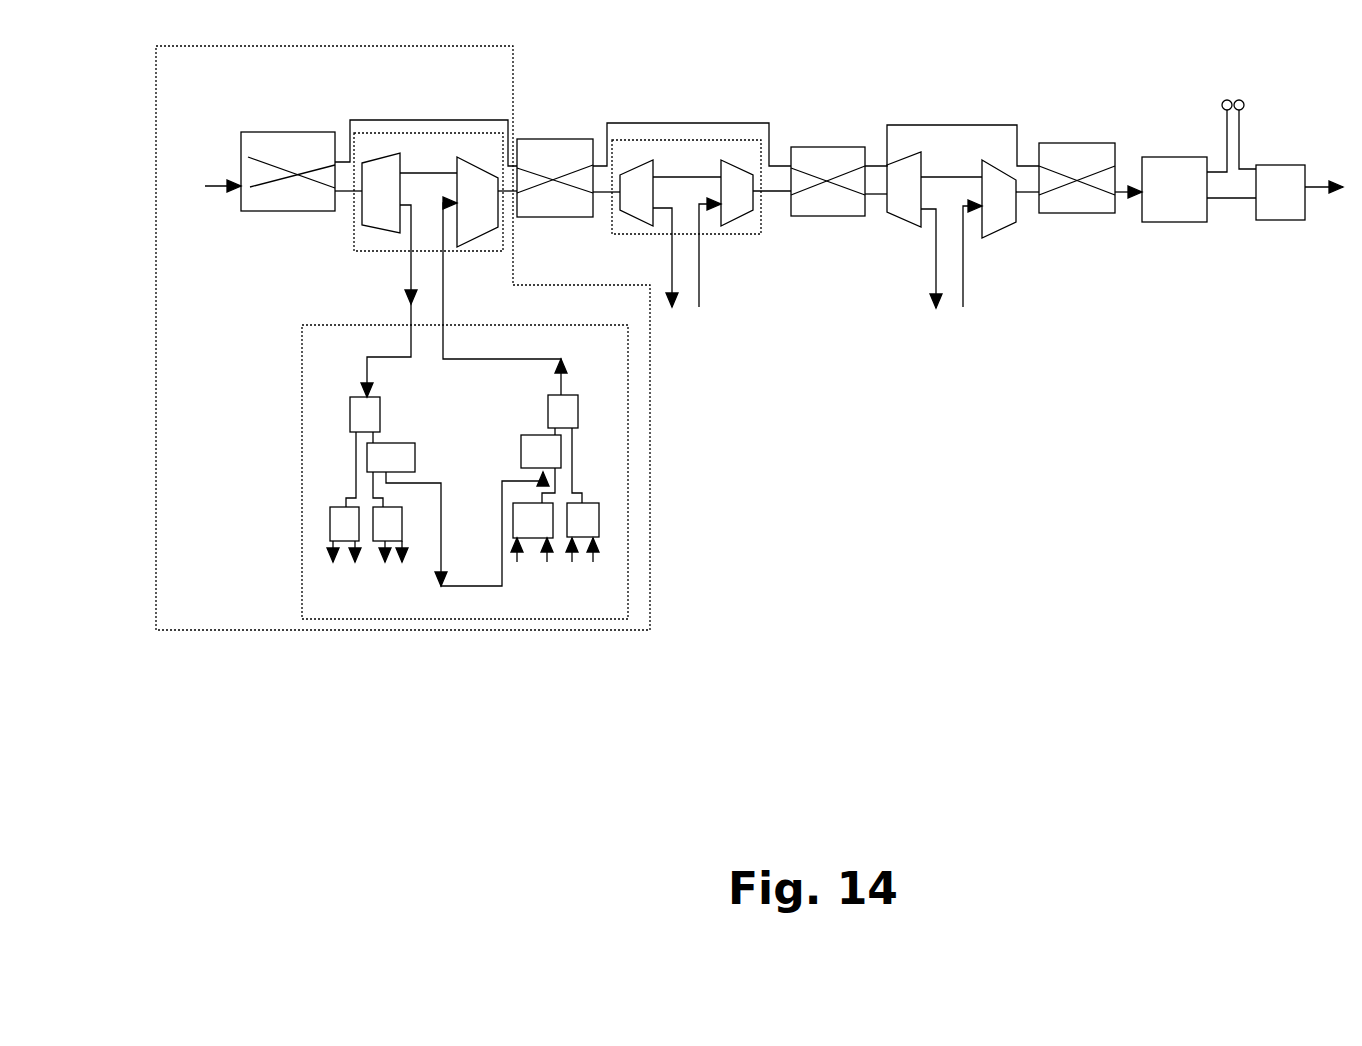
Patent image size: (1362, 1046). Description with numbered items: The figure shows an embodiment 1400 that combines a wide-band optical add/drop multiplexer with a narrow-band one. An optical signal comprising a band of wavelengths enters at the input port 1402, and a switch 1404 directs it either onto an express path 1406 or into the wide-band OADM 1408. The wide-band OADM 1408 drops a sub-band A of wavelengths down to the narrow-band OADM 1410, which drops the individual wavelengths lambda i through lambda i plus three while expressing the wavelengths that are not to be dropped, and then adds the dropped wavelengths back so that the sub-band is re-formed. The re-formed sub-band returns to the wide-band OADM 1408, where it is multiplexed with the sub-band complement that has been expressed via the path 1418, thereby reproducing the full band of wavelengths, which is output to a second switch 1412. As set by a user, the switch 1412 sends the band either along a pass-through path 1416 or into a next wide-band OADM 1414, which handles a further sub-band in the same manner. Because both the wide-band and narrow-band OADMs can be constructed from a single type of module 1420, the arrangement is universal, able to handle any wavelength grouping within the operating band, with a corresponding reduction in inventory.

The optical add/drop node with sub-band switching 1400 is at (749, 338).
The input port 1402 is at (225, 178).
The switch 1404 is at (262, 130).
The express path 1406 is at (408, 120).
The wide-band OADM 1408 is at (382, 196).
The narrow-band OADM 1410 is at (298, 393).
The switch 1412 is at (549, 137).
The next wide-band OADM 1414 is at (743, 237).
The pass-through path 1416 is at (652, 122).
The path 1418 is at (420, 178).
The module 1420 is at (657, 478).